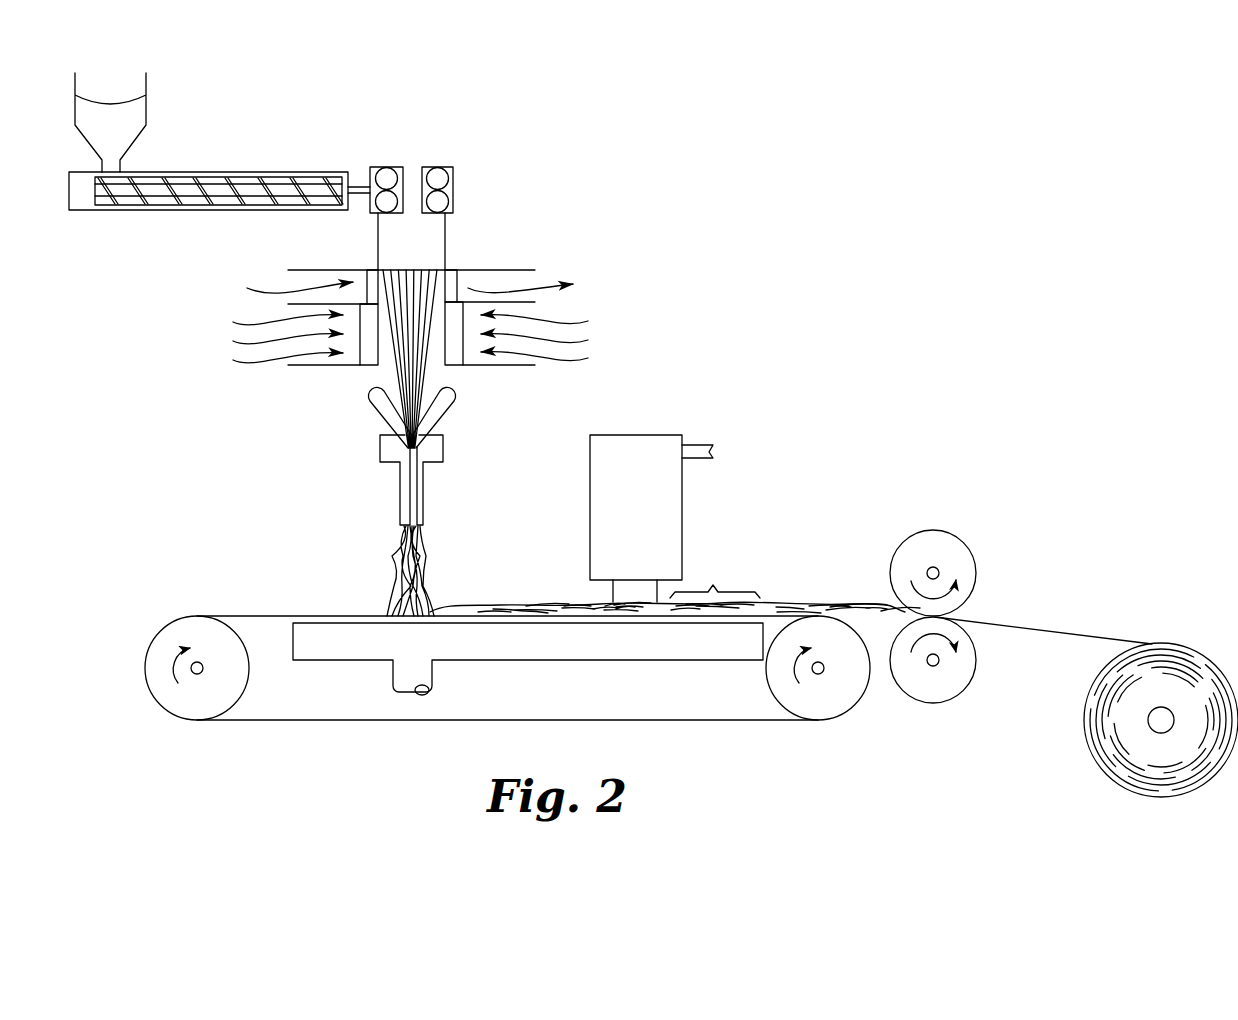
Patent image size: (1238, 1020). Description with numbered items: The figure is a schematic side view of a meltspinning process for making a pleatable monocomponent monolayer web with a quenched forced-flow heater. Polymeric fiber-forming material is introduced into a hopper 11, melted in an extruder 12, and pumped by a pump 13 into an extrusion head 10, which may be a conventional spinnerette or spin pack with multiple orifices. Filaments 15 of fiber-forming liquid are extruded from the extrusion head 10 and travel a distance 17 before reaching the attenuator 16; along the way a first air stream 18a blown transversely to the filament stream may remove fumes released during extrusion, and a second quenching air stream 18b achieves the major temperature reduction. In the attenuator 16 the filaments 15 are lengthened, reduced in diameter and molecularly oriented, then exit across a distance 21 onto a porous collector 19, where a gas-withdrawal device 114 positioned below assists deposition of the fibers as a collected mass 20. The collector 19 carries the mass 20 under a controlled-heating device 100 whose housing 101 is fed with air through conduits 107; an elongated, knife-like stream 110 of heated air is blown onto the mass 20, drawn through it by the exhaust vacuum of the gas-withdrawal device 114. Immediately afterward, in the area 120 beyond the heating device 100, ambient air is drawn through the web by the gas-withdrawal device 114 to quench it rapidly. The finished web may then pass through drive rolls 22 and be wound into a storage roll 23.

The extrusion head 10 is at (435, 241).
The hopper 11 is at (135, 117).
The extruder 12 is at (213, 172).
The pump 13 is at (426, 166).
The filaments 15 is at (397, 371).
The attenuator 16 is at (465, 387).
The distance 17 is at (410, 314).
The first air stream 18a is at (547, 283).
The second quenching air stream 18b is at (575, 323).
The collector 19 is at (267, 615).
The mass of fibers 20 is at (855, 603).
The distance 21 is at (384, 527).
The drive rolls 22 is at (923, 534).
The storage roll 23 is at (1207, 658).
The controlled-heating device 100 is at (693, 414).
The housing 101 is at (634, 440).
The conduits 107 is at (703, 453).
The stream of heated air 110 is at (613, 598).
The gas-withdrawal device 114 is at (498, 653).
The area 120 is at (715, 575).